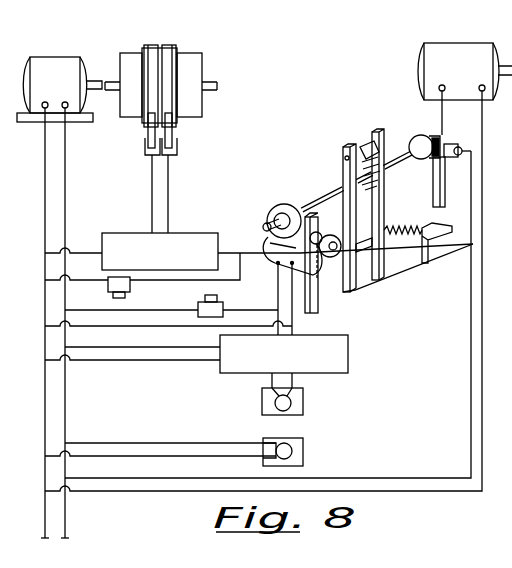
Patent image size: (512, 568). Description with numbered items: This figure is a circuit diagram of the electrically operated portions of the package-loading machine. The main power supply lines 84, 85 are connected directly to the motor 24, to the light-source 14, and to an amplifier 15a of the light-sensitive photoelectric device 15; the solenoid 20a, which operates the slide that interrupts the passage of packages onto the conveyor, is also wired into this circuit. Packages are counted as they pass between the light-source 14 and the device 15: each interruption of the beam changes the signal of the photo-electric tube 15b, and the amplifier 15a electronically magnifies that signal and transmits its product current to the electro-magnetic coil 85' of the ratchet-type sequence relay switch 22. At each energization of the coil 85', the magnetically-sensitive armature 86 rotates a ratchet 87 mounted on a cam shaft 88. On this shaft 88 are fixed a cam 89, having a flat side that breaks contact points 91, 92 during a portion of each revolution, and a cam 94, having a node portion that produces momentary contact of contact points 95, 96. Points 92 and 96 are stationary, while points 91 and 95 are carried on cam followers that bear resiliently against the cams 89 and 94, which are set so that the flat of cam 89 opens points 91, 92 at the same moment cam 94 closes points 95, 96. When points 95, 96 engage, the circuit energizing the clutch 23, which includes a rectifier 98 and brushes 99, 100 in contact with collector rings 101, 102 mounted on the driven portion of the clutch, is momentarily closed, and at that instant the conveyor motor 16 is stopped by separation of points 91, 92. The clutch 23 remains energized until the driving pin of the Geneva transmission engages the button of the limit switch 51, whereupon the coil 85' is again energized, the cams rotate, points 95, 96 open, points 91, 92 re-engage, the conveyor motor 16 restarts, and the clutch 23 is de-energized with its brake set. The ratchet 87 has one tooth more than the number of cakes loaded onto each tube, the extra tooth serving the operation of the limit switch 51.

The light-source 14 is at (306, 452).
The light-sensitive photoelectric device 15 is at (269, 376).
The amplifier 15a is at (230, 375).
The photo-electric tube 15b is at (262, 401).
The conveyor motor 16 is at (453, 49).
The solenoid 20a is at (112, 285).
The ratchet-type sequence relay switch 22 is at (396, 104).
The clutch 23 is at (195, 46).
The motor 24 is at (47, 65).
The limit switch 51 is at (200, 302).
The main power supply line 84 is at (46, 512).
The main power supply line 85 is at (85, 323).
The electro-magnetic coil 85' is at (296, 275).
The magnetically-sensitive armature 86 is at (378, 264).
The ratchet 87 is at (374, 181).
The cam shaft 88 is at (316, 205).
The cam 89 is at (416, 137).
The contact point 91 is at (449, 141).
The contact point 92 is at (451, 160).
The cam 94 is at (281, 207).
The contact point 95 is at (319, 234).
The contact point 96 is at (334, 267).
The rectifier 98 is at (121, 233).
The brush 99 is at (147, 132).
The brush 100 is at (176, 131).
The collector ring 101 is at (152, 44).
The collector ring 102 is at (168, 44).